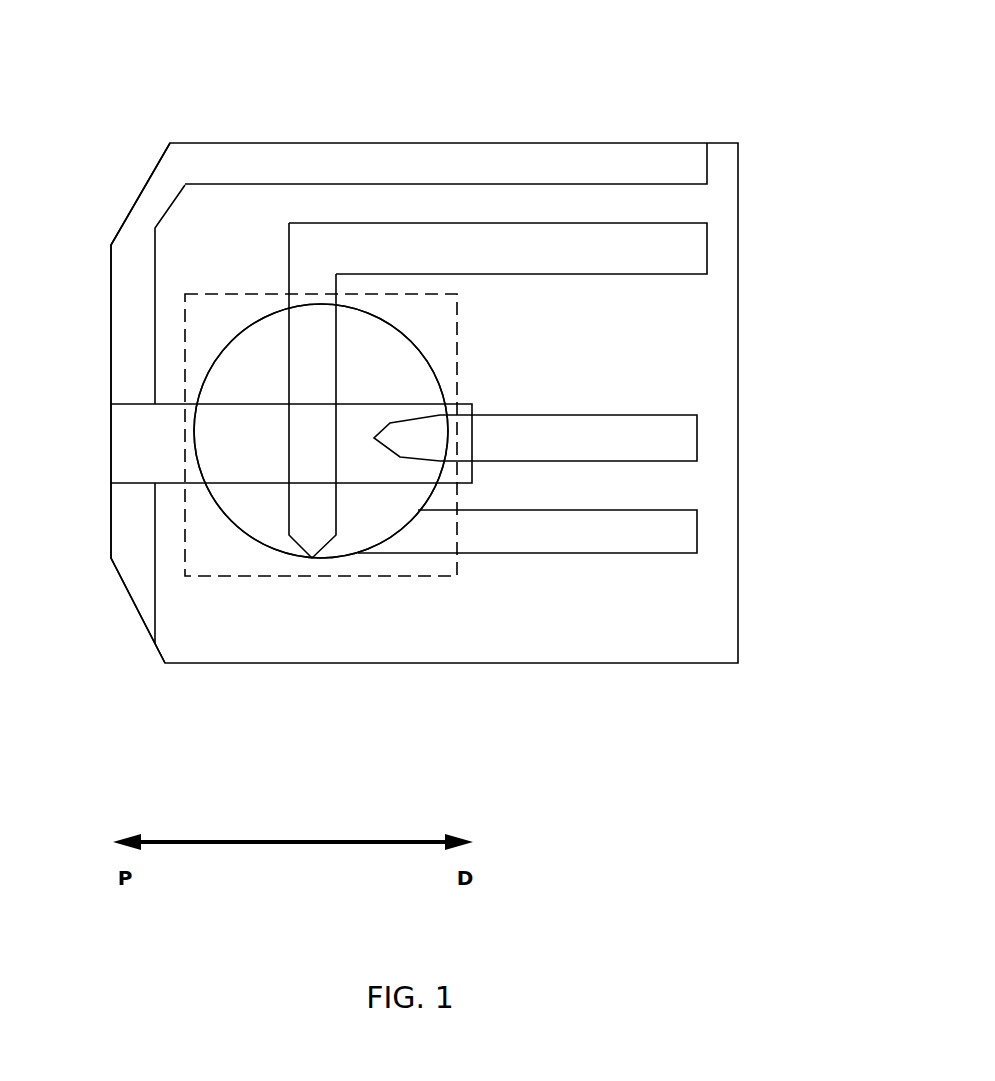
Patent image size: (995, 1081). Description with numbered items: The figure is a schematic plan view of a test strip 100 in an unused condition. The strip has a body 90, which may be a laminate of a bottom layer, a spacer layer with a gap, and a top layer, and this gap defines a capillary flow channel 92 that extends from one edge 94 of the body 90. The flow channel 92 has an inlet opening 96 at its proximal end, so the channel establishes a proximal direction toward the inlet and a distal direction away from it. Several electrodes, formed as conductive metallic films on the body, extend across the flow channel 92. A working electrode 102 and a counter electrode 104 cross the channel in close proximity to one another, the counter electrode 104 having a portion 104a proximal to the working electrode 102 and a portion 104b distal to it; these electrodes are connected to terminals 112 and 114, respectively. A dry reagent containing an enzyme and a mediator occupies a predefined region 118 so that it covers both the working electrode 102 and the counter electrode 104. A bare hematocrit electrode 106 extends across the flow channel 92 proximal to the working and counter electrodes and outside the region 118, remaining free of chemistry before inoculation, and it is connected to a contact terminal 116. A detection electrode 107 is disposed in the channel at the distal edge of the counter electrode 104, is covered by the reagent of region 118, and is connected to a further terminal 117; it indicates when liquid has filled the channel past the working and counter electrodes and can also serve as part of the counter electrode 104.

The body 90 is at (736, 630).
The capillary flow channel 92 is at (136, 483).
The edge of the body 94 is at (111, 522).
The inlet opening 96 is at (111, 442).
The test strip 100 is at (428, 50).
The working electrode 102 is at (309, 362).
The counter electrode 104 is at (395, 535).
The proximal portion of counter electrode 104a is at (260, 510).
The distal portion of counter electrode 104b is at (357, 510).
The bare electrode 106 is at (133, 302).
The detection electrode 107 is at (425, 437).
The terminal 112 is at (707, 257).
The terminal 114 is at (697, 537).
The contact terminal 116 is at (707, 175).
The terminal 117 is at (697, 440).
The predefined region 118 is at (313, 580).